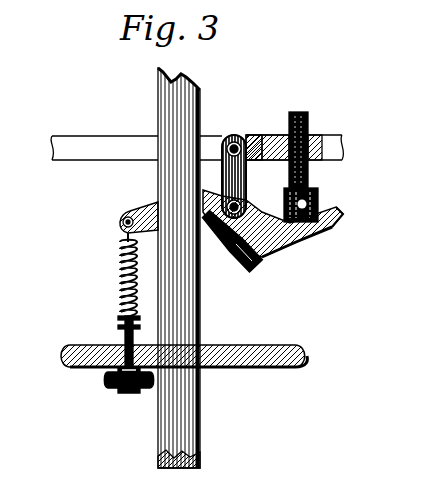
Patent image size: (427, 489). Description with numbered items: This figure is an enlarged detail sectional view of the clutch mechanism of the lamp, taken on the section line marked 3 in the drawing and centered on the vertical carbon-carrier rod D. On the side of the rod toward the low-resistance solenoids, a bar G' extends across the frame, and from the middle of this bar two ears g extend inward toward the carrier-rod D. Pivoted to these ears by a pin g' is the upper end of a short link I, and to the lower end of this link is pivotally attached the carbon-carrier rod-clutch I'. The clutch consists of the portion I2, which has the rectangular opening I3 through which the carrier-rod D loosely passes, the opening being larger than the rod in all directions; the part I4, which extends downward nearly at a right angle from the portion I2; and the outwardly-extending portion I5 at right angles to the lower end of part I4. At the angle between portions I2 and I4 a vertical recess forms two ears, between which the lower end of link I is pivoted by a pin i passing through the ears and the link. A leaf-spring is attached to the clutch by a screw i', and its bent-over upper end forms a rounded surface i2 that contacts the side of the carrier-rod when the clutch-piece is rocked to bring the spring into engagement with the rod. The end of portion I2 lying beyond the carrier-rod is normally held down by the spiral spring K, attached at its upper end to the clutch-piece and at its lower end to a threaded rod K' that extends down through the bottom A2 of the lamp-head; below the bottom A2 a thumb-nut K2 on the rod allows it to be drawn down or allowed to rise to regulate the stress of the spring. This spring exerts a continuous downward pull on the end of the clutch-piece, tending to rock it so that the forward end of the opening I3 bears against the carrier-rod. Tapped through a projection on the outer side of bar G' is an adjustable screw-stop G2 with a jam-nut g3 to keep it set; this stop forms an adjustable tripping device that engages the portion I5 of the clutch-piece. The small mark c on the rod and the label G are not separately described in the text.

The section line 3 is at (205, 90).
The carbon-carrier rod D is at (172, 105).
The bar G is at (197, 140).
The ears g is at (258, 136).
The jam-nut g3 is at (322, 162).
The pin g' is at (234, 167).
The rounded surface i2 is at (229, 153).
The pin i is at (241, 202).
The bar G' is at (309, 138).
The adjustable screw-stop G2 is at (318, 204).
The link I is at (273, 214).
The part of clutch I4 is at (258, 224).
The outwardly-extending portion I5 is at (332, 230).
The screw i' is at (232, 252).
The rectangular opening I3 is at (212, 214).
The carbon-carrier rod-clutch I' is at (139, 206).
The portion of clutch I2 is at (122, 222).
The post mark c is at (169, 215).
The spiral spring K is at (115, 279).
The threaded rod K' is at (116, 342).
The bottom of lamp-head A2 is at (184, 345).
The thumb-nut K2 is at (120, 390).